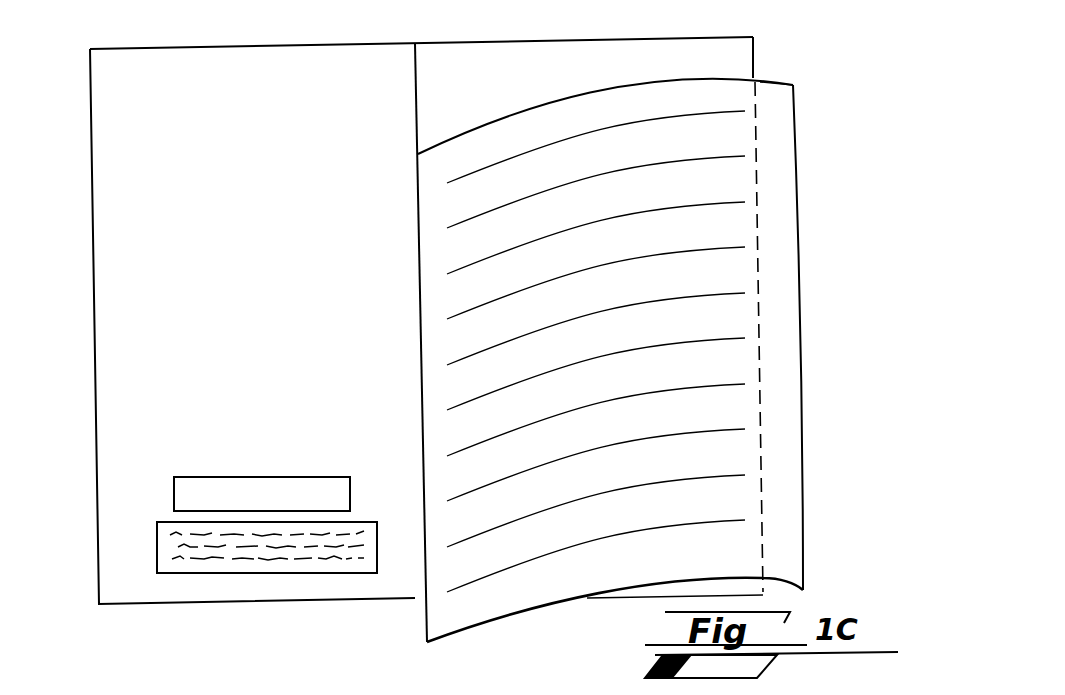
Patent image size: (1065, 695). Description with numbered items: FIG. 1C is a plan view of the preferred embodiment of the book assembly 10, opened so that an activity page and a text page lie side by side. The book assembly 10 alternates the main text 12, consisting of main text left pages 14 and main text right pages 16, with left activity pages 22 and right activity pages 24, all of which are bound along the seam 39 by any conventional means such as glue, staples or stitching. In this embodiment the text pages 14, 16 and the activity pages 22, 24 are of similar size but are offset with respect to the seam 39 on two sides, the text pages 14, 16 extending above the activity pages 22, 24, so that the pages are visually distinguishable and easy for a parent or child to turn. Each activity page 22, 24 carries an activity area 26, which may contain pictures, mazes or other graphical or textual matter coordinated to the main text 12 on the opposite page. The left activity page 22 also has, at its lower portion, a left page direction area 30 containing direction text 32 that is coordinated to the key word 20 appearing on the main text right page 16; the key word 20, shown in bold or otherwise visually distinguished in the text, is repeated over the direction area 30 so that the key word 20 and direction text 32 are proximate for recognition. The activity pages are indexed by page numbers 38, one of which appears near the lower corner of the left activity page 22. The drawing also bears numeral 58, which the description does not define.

The book assembly 10 is at (300, 38).
The main text 12 is at (800, 212).
The main text left page 14 is at (236, 691).
The main text right page 16 is at (770, 92).
The key word 20 is at (262, 477).
The left activity page 22 is at (115, 75).
The right activity page 24 is at (727, 46).
The activity area 26 is at (257, 92).
The left page direction area 30 is at (181, 573).
The direction text 32 is at (257, 559).
The page number 38 is at (105, 580).
The seam 39 is at (413, 88).
The page portion 58 is at (420, 694).